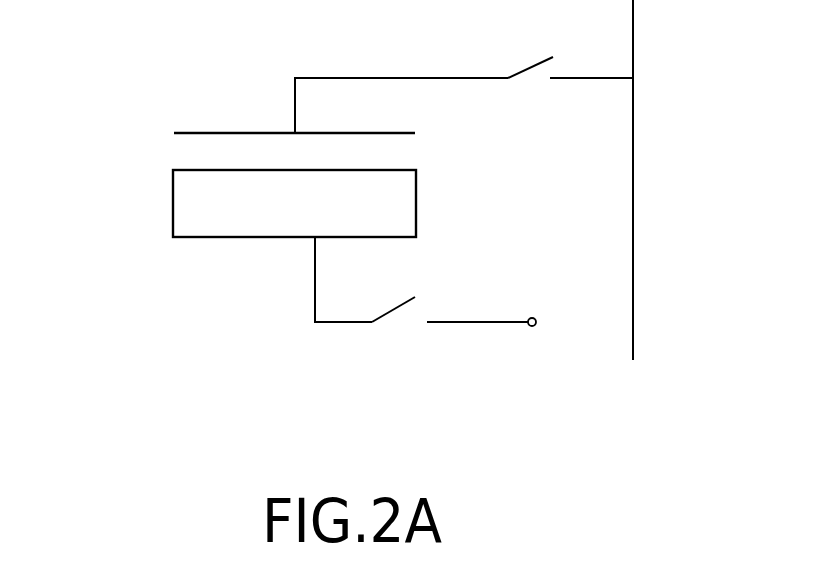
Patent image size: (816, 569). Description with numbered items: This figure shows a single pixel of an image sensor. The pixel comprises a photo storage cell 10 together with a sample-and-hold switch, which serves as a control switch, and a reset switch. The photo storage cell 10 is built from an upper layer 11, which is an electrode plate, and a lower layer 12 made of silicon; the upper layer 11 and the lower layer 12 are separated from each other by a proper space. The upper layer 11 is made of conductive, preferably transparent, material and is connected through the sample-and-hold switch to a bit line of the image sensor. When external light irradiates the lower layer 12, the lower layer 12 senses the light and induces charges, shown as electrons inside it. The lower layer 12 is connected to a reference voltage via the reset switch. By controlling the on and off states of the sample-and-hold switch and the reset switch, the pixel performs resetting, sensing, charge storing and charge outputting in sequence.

The photo storage cell 10 is at (118, 258).
The upper layer 11 is at (258, 132).
The lower layer 12 is at (415, 218).